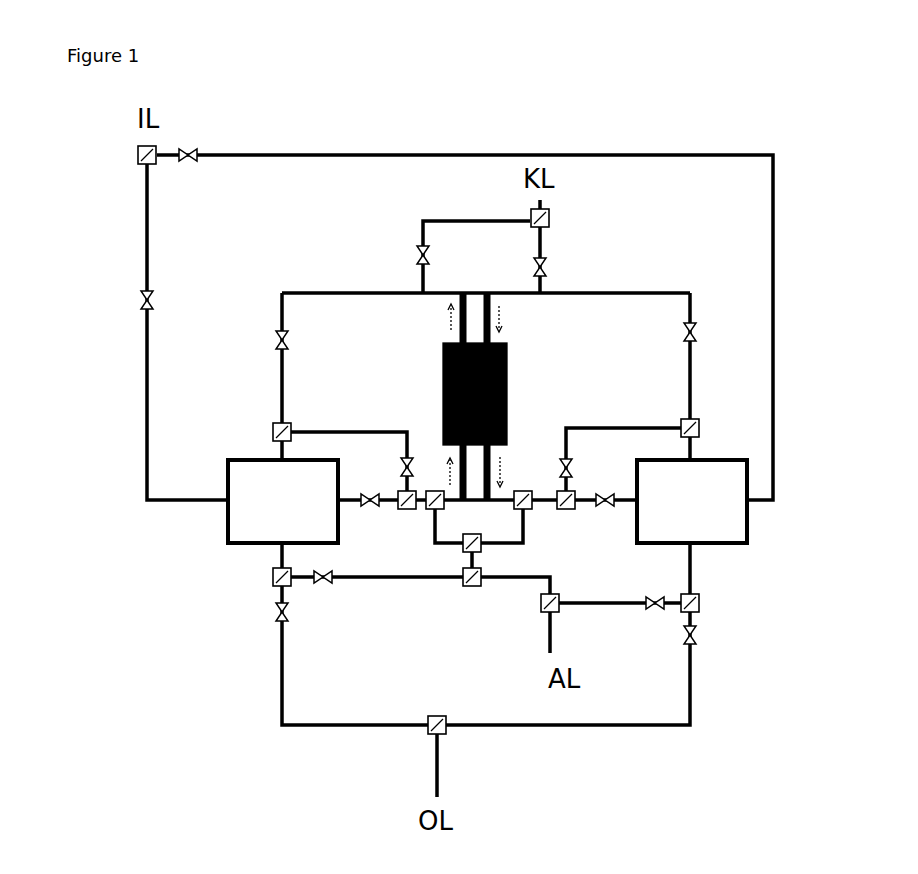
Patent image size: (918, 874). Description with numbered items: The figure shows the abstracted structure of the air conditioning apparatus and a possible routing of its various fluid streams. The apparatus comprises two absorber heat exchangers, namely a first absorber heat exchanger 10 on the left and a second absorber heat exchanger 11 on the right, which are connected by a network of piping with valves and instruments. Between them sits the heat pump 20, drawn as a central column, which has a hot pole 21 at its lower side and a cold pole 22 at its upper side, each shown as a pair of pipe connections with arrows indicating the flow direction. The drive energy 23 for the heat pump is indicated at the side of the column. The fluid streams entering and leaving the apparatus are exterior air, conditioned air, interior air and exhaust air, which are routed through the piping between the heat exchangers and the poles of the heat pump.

The absorber heat exchanger 1 10 is at (271, 508).
The absorber heat exchanger 2 11 is at (701, 508).
The heat pump 20 is at (462, 394).
The hot pole of the heat pump 21 is at (486, 472).
The cold pole of the heat pump 22 is at (489, 318).
The drive energy for the heat pump 23 is at (507, 373).